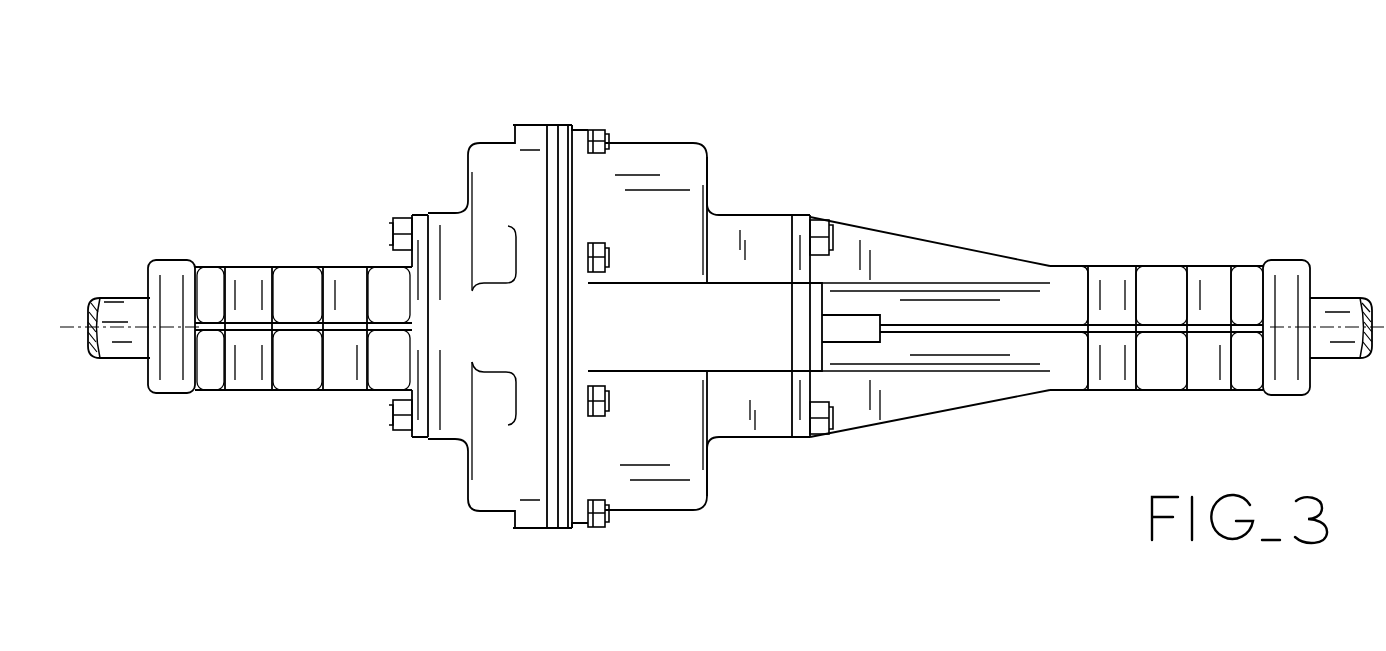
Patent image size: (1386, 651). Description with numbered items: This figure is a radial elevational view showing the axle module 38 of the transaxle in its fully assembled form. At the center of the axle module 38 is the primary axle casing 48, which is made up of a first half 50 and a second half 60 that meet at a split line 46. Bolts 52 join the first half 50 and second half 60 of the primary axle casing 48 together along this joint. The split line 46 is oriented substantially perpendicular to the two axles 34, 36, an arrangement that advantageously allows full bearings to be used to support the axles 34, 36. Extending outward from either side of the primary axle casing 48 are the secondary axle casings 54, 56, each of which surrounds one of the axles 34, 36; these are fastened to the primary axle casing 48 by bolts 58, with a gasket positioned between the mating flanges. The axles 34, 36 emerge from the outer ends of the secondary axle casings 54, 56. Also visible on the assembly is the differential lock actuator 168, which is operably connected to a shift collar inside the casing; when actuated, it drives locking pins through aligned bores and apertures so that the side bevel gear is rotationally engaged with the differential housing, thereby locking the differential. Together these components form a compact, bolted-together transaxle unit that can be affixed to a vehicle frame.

The axle 34 is at (121, 350).
The axle 36 is at (1337, 350).
The axle module 38 is at (873, 88).
The split line 46 is at (574, 148).
The primary axle casing 48 is at (556, 120).
The first half 50 is at (472, 486).
The bolts 52 is at (606, 140).
The secondary axle casing 54 is at (252, 395).
The secondary axle casing 56 is at (1048, 243).
The bolts 58 is at (392, 233).
The second half 60 is at (693, 499).
The differential lock actuator 168 is at (868, 337).